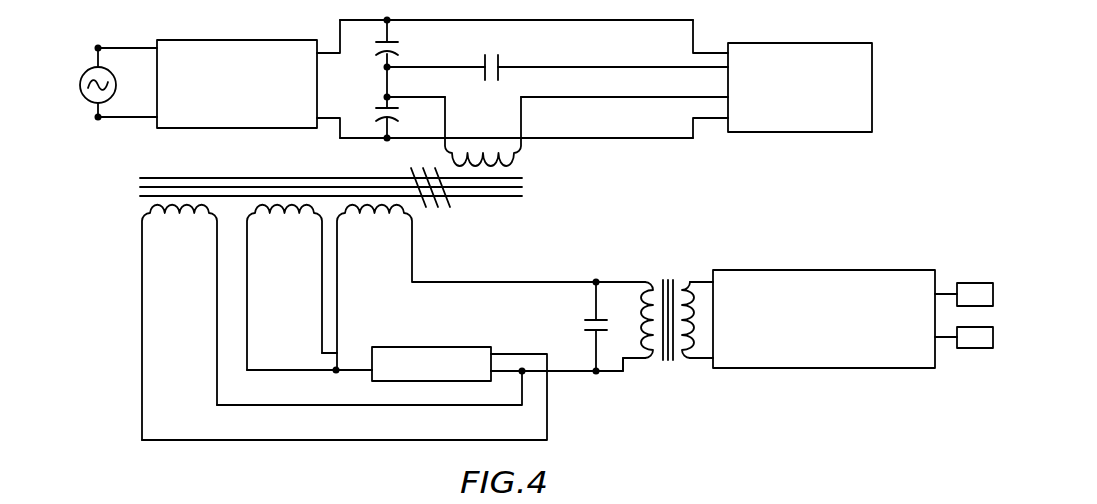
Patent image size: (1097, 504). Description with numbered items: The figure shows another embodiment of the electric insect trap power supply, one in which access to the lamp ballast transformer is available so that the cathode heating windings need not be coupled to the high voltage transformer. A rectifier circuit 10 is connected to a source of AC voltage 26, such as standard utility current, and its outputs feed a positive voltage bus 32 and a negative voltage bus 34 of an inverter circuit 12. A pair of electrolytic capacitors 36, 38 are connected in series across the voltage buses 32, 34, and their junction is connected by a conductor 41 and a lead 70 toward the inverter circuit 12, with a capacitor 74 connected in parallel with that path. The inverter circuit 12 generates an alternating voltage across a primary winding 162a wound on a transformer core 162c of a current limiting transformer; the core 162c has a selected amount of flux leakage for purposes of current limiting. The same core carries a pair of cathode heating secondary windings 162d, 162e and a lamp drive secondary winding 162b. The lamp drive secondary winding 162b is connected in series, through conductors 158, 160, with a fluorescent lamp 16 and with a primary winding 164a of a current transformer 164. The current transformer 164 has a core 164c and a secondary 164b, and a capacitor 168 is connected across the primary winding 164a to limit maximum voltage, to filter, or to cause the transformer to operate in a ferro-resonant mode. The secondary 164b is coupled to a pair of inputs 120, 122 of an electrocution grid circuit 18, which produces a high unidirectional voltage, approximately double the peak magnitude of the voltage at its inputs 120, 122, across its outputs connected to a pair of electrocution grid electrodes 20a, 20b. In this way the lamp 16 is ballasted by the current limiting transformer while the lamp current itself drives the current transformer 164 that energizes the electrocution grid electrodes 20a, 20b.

The rectifier circuit 10 is at (190, 40).
The inverter circuit 12 is at (790, 43).
The fluorescent lamp 16 is at (441, 347).
The electrocution grid circuit 18 is at (826, 270).
The electrocution grid electrode 20a is at (982, 283).
The electrocution grid electrode 20b is at (985, 350).
The source of AC voltage 26 is at (90, 72).
The positive voltage bus 32 is at (487, 20).
The negative voltage bus 34 is at (605, 138).
The electrolytic capacitor 36 is at (399, 56).
The electrolytic capacitor 38 is at (396, 117).
The center tap conductor 41 is at (430, 97).
The lead 70 is at (604, 97).
The capacitor 74 is at (500, 58).
The input 120 is at (700, 282).
The input 122 is at (703, 362).
The lamp conductor 158 is at (355, 370).
The lamp conductor 160 is at (525, 380).
The primary winding 162a is at (523, 155).
The lamp drive secondary winding 162b is at (404, 243).
The transformer core 162c is at (525, 187).
The cathode heating secondary winding 162d is at (142, 213).
The cathode heating secondary winding 162e is at (314, 247).
The current transformer 164 is at (668, 280).
The primary winding 164a is at (652, 265).
The secondary 164b is at (690, 282).
The core 164c is at (670, 360).
The capacitor 168 is at (590, 318).